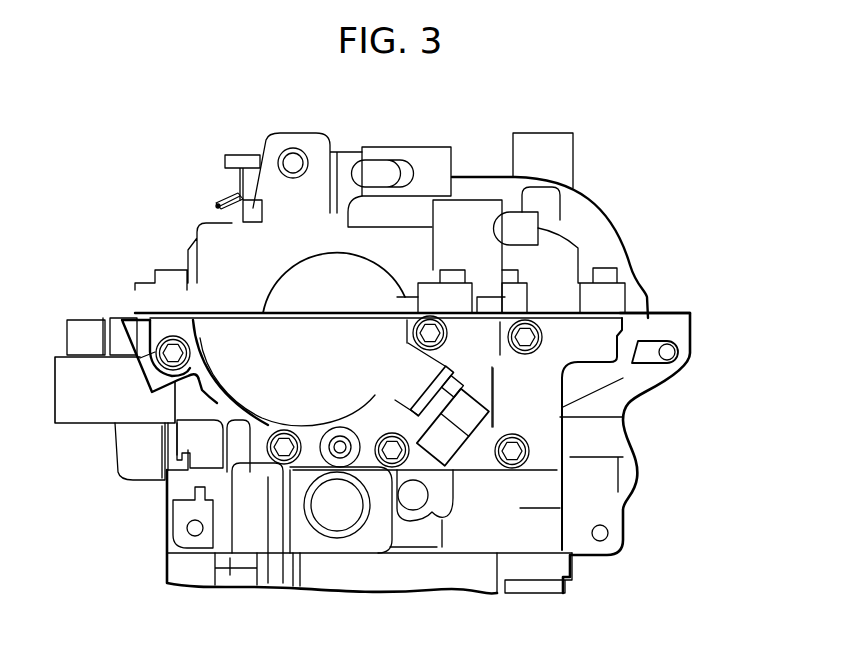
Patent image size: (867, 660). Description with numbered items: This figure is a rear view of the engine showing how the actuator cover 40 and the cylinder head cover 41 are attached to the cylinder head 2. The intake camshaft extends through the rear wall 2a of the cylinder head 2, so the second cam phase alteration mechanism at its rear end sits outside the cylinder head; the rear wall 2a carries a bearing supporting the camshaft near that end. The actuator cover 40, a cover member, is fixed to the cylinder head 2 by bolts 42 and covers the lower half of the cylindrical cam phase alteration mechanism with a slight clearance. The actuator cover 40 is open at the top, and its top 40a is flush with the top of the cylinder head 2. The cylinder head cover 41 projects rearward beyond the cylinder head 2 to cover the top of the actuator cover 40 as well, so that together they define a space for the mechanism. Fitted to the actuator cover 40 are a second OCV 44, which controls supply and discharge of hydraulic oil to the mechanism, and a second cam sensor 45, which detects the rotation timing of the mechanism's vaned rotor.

The cylinder head 2 is at (662, 384).
The rear wall of the cylinder head 2a is at (668, 317).
The actuator cover 40 is at (215, 403).
The top of the actuator cover 40a is at (262, 313).
The cylinder head cover 41 is at (613, 220).
The bolts 42 is at (172, 352).
The second OCV 44 is at (475, 200).
The second cam sensor 45 is at (468, 442).